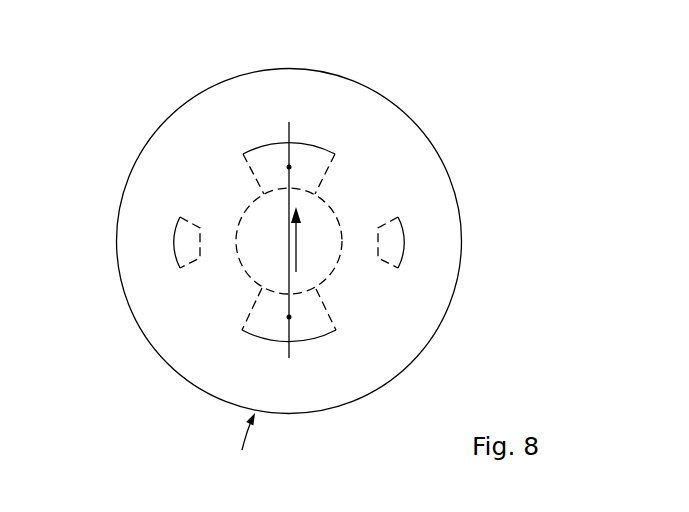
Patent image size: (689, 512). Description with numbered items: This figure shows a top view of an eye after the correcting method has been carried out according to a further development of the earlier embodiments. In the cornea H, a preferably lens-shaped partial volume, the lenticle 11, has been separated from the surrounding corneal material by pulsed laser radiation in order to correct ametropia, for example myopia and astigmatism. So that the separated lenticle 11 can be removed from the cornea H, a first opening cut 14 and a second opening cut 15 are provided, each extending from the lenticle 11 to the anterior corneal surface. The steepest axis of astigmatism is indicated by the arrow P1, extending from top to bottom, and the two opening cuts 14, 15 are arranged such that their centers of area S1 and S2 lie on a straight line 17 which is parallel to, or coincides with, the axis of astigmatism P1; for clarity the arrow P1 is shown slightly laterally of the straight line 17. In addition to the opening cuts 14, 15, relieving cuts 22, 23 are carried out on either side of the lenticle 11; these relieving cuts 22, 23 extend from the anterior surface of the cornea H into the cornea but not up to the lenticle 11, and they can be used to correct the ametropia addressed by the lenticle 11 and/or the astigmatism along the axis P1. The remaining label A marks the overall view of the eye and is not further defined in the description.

The cornea H is at (159, 355).
The partial volume (lenticle) 11 is at (240, 255).
The first opening cut 14 is at (322, 182).
The second opening cut 15 is at (323, 300).
The straight line 17 is at (287, 347).
The relieving cut 22 is at (404, 252).
The relieving cut 23 is at (173, 235).
The center of area of first opening cut S1 is at (289, 167).
The center of area of second opening cut S2 is at (289, 317).
The axis of astigmatism P1 is at (297, 233).
The arrow A is at (242, 450).